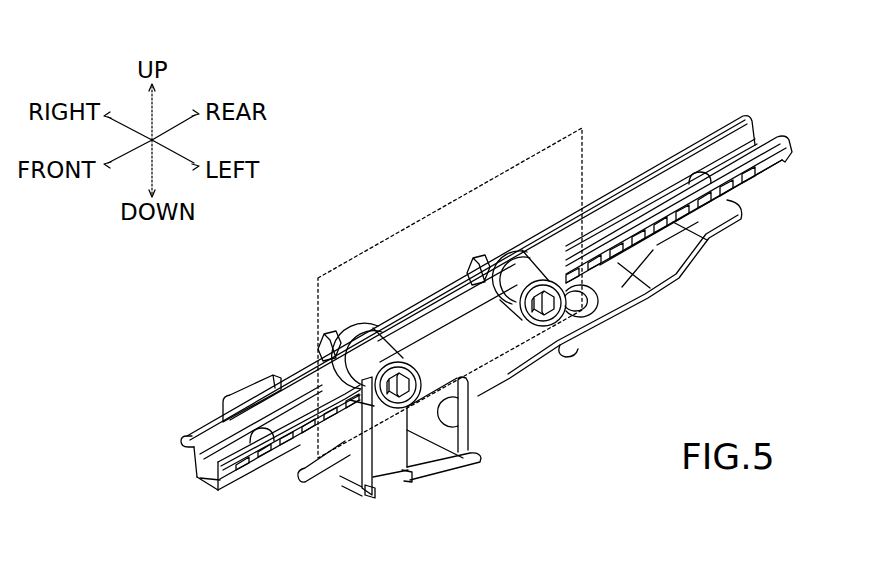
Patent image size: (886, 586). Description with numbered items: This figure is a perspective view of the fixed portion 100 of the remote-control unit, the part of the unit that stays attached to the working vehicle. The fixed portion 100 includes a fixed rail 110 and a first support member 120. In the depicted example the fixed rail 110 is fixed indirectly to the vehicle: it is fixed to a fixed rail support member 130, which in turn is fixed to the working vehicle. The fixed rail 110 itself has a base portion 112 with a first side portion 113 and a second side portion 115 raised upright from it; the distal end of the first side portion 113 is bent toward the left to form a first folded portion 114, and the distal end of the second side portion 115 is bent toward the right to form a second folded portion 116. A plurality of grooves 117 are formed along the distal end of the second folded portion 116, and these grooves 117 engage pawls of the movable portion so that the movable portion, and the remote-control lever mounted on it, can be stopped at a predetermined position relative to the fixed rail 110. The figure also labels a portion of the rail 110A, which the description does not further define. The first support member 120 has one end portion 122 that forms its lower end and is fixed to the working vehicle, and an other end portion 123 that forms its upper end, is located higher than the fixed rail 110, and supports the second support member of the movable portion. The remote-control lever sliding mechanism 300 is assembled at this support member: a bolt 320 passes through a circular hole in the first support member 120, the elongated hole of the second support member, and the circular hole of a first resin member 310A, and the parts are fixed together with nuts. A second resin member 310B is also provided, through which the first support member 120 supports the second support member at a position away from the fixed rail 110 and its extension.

The fixed portion 100 is at (804, 63).
The fixed rail 110 is at (729, 121).
The rail front portion 110A is at (718, 207).
The base portion 112 is at (210, 488).
The first side portion 113 is at (192, 466).
The first folded portion 114 is at (183, 442).
The second side portion 115 is at (227, 482).
The second folded portion 116 is at (247, 470).
The grooves 117 is at (292, 446).
The first support member 120 is at (518, 405).
The one end portion 122 is at (510, 418).
The other end portion 123 is at (452, 318).
The fixed rail support member 130 is at (638, 313).
The remote-control lever sliding mechanism 300 is at (485, 183).
The first resin member 310A is at (503, 253).
The second resin member 310B is at (362, 330).
The bolt 320 is at (407, 388).